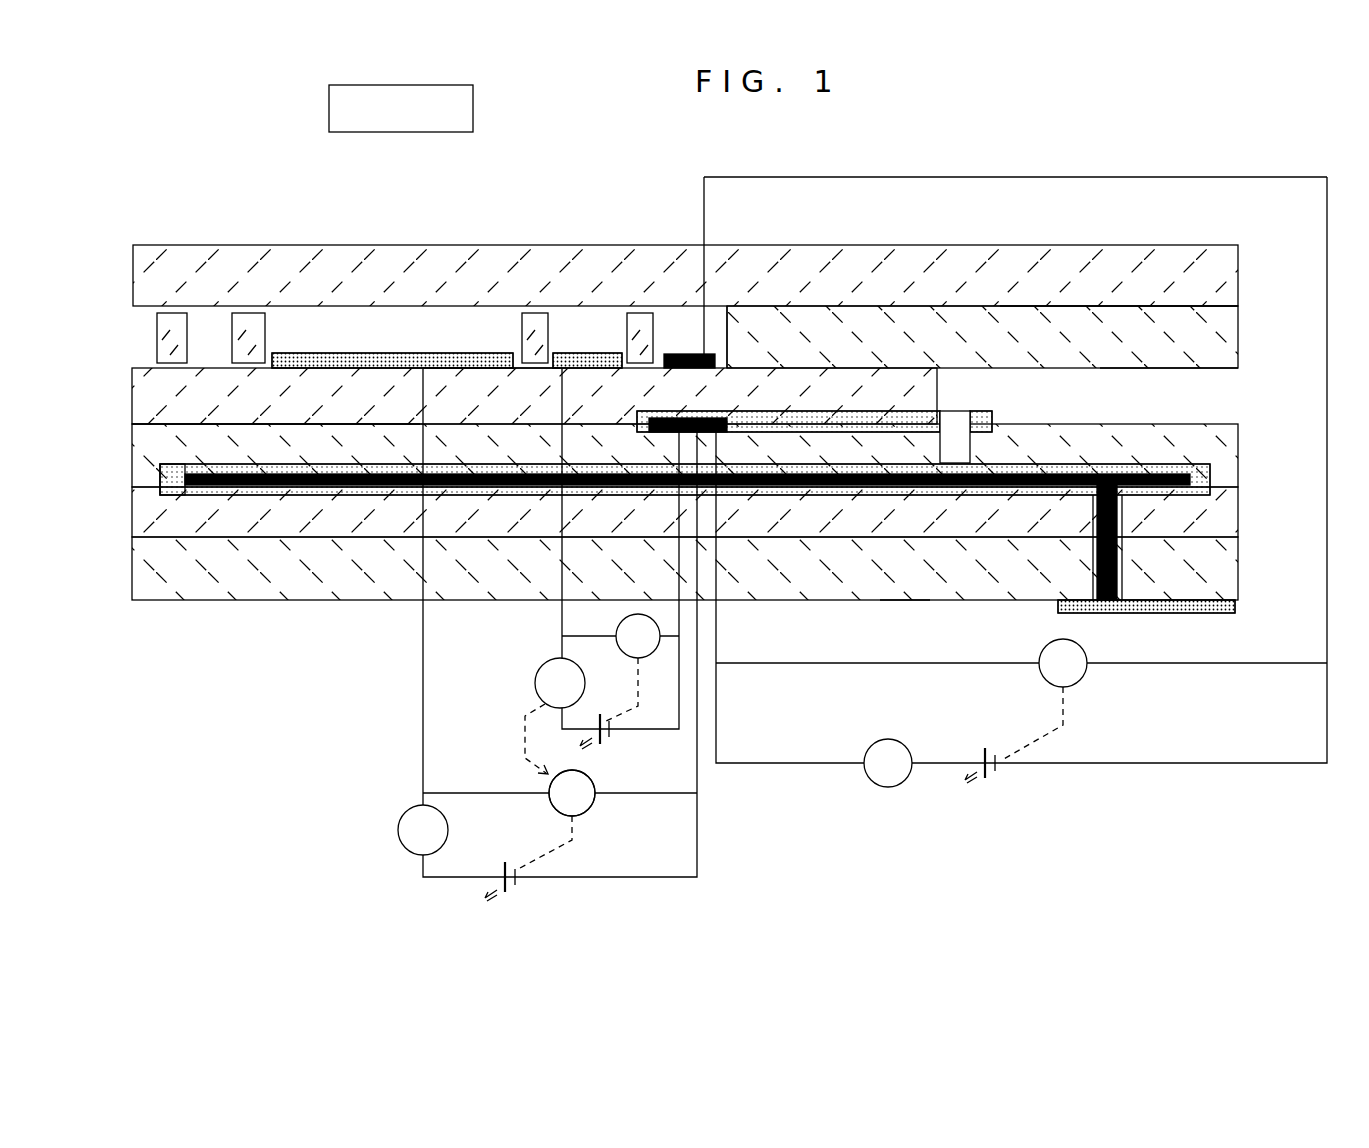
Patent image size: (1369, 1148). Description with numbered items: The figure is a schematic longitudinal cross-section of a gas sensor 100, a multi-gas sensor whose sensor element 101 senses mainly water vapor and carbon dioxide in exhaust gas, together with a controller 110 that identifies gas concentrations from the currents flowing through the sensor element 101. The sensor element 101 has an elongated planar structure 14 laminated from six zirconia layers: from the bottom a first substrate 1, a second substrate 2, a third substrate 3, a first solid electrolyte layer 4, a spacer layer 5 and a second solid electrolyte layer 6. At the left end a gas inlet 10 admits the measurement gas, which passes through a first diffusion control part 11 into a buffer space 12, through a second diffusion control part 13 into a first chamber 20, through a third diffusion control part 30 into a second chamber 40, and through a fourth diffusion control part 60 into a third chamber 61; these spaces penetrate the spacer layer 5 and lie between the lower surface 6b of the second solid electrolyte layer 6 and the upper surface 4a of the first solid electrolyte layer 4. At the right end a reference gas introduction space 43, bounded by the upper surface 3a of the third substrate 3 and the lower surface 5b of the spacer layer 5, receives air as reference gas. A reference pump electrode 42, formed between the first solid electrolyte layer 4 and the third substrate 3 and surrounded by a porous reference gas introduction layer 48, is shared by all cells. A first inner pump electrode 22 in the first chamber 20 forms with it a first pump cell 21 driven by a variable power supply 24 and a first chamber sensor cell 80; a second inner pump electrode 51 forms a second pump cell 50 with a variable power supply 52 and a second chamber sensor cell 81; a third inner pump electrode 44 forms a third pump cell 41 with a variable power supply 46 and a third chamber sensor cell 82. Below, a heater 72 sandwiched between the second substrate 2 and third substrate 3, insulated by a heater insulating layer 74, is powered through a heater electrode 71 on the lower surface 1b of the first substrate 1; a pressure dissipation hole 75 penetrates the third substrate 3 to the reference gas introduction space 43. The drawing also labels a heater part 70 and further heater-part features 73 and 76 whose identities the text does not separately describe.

The gas sensor 100 is at (166, 78).
The controller 110 is at (424, 86).
The gas inlet 10 is at (128, 341).
The first diffusion control part 11 is at (173, 312).
The buffer space 12 is at (200, 318).
The second diffusion control part 13 is at (250, 312).
The structure 14 is at (855, 245).
The sensor element 101 is at (978, 245).
The first chamber 20 is at (437, 352).
The first inner pump electrode 22 is at (360, 354).
The third diffusion control part 30 is at (535, 313).
The second chamber 40 is at (560, 352).
The second inner pump electrode 51 is at (598, 354).
The fourth diffusion control part 60 is at (640, 313).
The third chamber 61 is at (727, 336).
The lower surface of the second solid electrolyte layer 6b is at (1062, 322).
The lower surface of the spacer layer 5b is at (1134, 383).
The second solid electrolyte layer 6 is at (1230, 278).
The spacer layer 5 is at (1230, 316).
The reference gas introduction space 43 is at (1224, 396).
The first solid electrolyte layer 4 is at (140, 398).
The third substrate 3 is at (140, 443).
The second substrate 2 is at (1232, 515).
The first substrate 1 is at (1232, 563).
The lower surface of the first substrate 1b is at (905, 603).
The heater 70 is at (1214, 466).
The heater insulating layer 74 is at (170, 496).
The heater 72 is at (230, 486).
The heater insulating layer 76 is at (822, 497).
The upper surface of the third substrate 3a is at (272, 411).
The upper surface of the first solid electrolyte layer 4a is at (439, 358).
The third inner pump electrode 44 is at (693, 370).
The reference gas introduction layer 48 is at (840, 411).
The pressure dissipation hole 75 is at (968, 416).
The reference pump electrode 42 is at (727, 433).
The heater via 73 is at (1126, 560).
The heater electrode 71 is at (1236, 607).
The first pump cell 21 is at (532, 884).
The variable power supply 24 is at (512, 890).
The first chamber sensor cell 80 is at (620, 800).
The second pump cell 50 is at (554, 738).
The variable power supply 52 is at (608, 722).
The second chamber sensor cell 81 is at (649, 660).
The third chamber sensor cell 82 is at (1091, 679).
The third pump cell 41 is at (1010, 779).
The variable power supply 46 is at (995, 750).